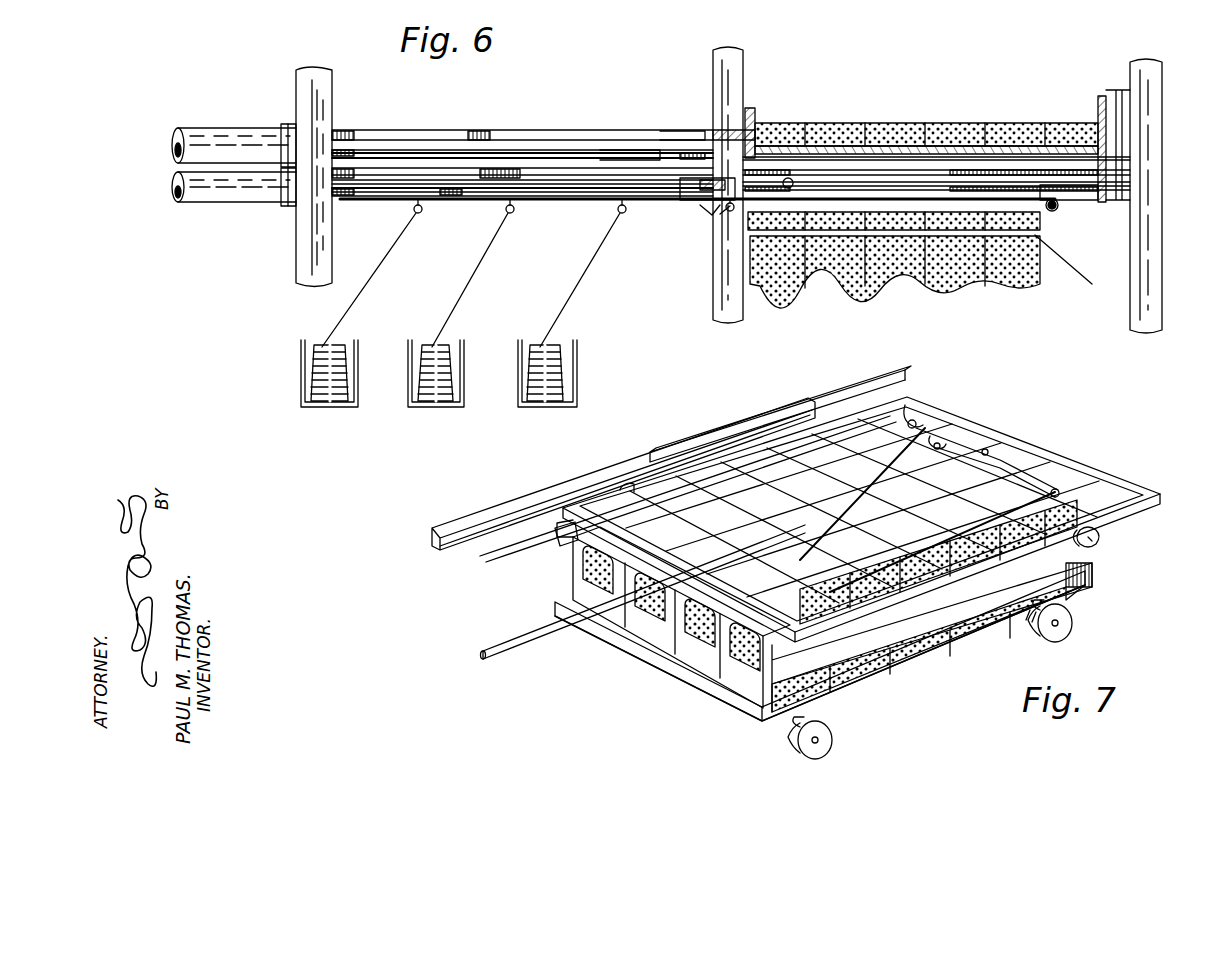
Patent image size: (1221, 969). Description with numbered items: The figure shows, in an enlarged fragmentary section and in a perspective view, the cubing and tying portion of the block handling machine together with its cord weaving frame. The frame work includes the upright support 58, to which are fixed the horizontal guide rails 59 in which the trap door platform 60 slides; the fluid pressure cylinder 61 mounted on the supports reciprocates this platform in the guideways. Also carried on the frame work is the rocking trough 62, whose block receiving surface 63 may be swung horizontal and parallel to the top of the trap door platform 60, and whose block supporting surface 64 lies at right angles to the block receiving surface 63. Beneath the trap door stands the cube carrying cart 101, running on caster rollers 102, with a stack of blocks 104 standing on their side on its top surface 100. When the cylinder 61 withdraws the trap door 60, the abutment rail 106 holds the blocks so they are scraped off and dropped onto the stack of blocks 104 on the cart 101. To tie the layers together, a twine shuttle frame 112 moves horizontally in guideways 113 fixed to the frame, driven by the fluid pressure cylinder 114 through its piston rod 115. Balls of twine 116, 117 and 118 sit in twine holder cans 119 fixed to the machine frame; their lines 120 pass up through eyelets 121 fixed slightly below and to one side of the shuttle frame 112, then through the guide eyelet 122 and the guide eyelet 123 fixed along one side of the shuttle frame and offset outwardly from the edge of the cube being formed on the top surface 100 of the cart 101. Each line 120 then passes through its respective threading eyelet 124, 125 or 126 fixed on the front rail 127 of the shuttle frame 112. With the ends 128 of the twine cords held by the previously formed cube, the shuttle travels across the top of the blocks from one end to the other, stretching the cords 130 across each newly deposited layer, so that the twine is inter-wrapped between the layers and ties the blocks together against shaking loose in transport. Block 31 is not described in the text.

In FIG. 6, the block 31 is at (887, 124).
In FIG. 6, the upright support 58 is at (298, 265).
In FIG. 6, the horizontal guide rail 59 is at (613, 134).
In FIG. 6, the trap door platform 60 is at (899, 132).
In FIG. 6, the fluid pressure cylinder 61 is at (211, 126).
In FIG. 6, the rocking trough 62 is at (1108, 84).
In FIG. 6, the block receiving surface 63 is at (1046, 156).
In FIG. 6, the block supporting surface 64 is at (1090, 108).
In FIG. 7, the top surface 100 is at (859, 685).
In FIG. 7, the cube carrying cart 101 is at (631, 678).
In FIG. 7, the caster roller 102 is at (1075, 628).
In FIG. 6, the stack of blocks 104 is at (938, 274).
In FIG. 7, the stack of blocks 104 is at (966, 616).
In FIG. 6, the abutment rail 106 is at (756, 112).
In FIG. 6, the twine shuttle frame 112 is at (729, 204).
In FIG. 7, the twine shuttle frame 112 is at (1120, 520).
In FIG. 6, the guideway 113 is at (1064, 192).
In FIG. 7, the guideway 113 is at (638, 460).
In FIG. 6, the fluid pressure cylinder 114 is at (242, 189).
In FIG. 6, the piston rod 115 is at (456, 188).
In FIG. 7, the piston rod 115 is at (490, 652).
In FIG. 6, the ball of twine 116 is at (316, 347).
In FIG. 6, the ball of twine 117 is at (428, 346).
In FIG. 6, the ball of twine 118 is at (540, 346).
In FIG. 6, the twine holder can 119 is at (302, 382).
In FIG. 6, the line 120 is at (468, 274).
In FIG. 7, the line 120 is at (494, 562).
In FIG. 6, the eyelet 121 is at (411, 214).
In FIG. 6, the guide eyelet 122 is at (730, 220).
In FIG. 7, the guide eyelet 122 is at (562, 538).
In FIG. 6, the guide eyelet 123 is at (1056, 208).
In FIG. 7, the guide eyelet 123 is at (908, 408).
In FIG. 7, the threading eyelet 124 is at (937, 432).
In FIG. 7, the threading eyelet 125 is at (983, 446).
In FIG. 7, the threading eyelet 126 is at (1072, 472).
In FIG. 7, the front rail 127 is at (1110, 472).
In FIG. 7, the end of twine cord 128 is at (570, 577).
In FIG. 7, the stretched cord 130 is at (842, 506).